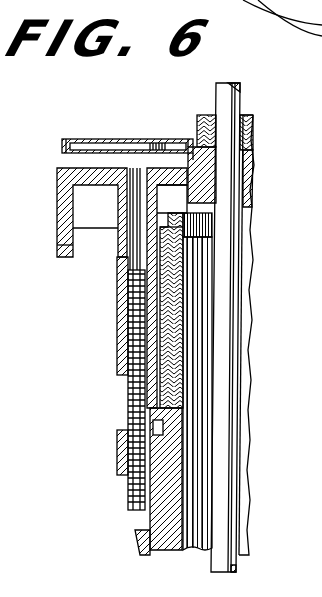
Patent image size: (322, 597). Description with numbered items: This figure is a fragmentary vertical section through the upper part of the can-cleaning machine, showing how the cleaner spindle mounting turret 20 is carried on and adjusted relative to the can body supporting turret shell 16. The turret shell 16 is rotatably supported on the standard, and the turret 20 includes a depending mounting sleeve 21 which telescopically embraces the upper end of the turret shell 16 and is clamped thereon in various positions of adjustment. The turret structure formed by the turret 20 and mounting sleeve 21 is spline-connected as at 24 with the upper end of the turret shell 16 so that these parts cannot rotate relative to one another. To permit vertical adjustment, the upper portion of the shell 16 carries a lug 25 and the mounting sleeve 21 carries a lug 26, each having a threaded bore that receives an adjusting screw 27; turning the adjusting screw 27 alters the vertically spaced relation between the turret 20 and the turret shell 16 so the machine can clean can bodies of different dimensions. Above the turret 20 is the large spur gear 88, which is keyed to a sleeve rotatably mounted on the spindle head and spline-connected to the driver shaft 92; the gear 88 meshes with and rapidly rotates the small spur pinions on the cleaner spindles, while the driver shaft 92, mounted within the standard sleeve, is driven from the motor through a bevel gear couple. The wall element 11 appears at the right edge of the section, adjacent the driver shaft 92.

The large spur gear 88 is at (82, 147).
The cleaner spindle mounting turret 20 is at (203, 185).
The driver shaft 92 is at (235, 221).
The housing wall 11 is at (280, 335).
The spline connection 24 is at (170, 290).
The mounting sleeve 21 is at (160, 338).
The adjusting screw 27 is at (133, 308).
The lug 26 is at (130, 352).
The lug 25 is at (120, 443).
The can body supporting turret shell 16 is at (162, 448).